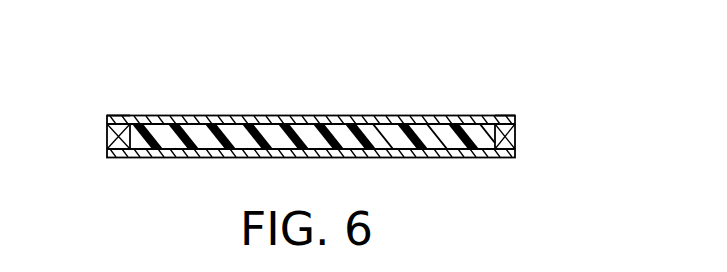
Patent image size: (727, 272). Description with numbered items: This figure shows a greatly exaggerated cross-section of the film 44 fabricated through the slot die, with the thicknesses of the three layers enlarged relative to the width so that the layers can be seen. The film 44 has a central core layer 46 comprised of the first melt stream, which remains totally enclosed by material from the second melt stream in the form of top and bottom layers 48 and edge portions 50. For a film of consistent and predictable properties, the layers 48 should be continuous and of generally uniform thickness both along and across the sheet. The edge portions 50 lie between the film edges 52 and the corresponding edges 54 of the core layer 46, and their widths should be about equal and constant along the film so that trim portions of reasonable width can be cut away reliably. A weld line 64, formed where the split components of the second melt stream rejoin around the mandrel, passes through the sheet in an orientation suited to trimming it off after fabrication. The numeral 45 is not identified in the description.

The film 44 is at (280, 97).
The top layer 45 is at (392, 115).
The central core layer 46 is at (201, 131).
The top and bottom layers 48 is at (407, 157).
The edge portions 50 is at (122, 116).
The film edges 52 is at (107, 121).
The edges of core layer 54 is at (123, 126).
The weld line 64 is at (107, 148).